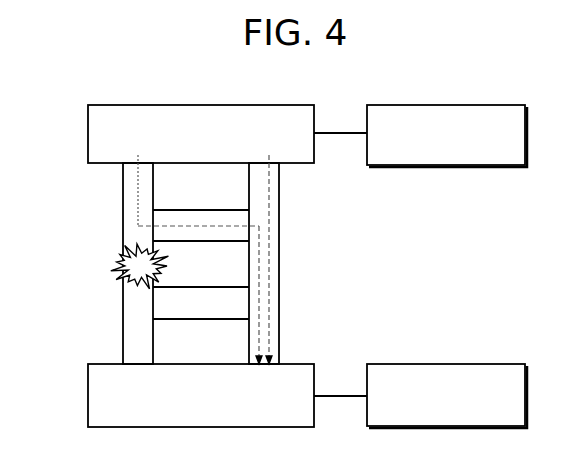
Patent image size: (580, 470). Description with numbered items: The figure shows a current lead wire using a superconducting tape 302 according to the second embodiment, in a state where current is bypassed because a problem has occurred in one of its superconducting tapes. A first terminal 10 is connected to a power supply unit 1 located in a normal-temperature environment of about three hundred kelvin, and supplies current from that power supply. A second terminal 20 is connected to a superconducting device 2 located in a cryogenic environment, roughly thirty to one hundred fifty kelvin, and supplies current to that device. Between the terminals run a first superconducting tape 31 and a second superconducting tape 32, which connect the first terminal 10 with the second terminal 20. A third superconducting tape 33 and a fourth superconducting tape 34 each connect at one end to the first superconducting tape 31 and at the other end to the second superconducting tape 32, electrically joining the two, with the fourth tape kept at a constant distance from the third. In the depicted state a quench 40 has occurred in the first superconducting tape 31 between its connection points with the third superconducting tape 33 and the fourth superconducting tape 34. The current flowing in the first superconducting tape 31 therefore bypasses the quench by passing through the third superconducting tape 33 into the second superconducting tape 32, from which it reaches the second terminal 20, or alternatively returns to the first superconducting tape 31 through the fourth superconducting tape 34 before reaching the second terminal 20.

The power supply unit 1 is at (525, 105).
The superconducting device 2 is at (525, 364).
The first terminal 10 is at (88, 105).
The second terminal 20 is at (88, 364).
The first superconducting tape 31 is at (123, 191).
The second superconducting tape 32 is at (279, 190).
The third superconducting tape 33 is at (240, 236).
The fourth superconducting tape 34 is at (240, 304).
The current lead wire using a superconducting tape 302 is at (96, 229).
The quench 40 is at (114, 258).